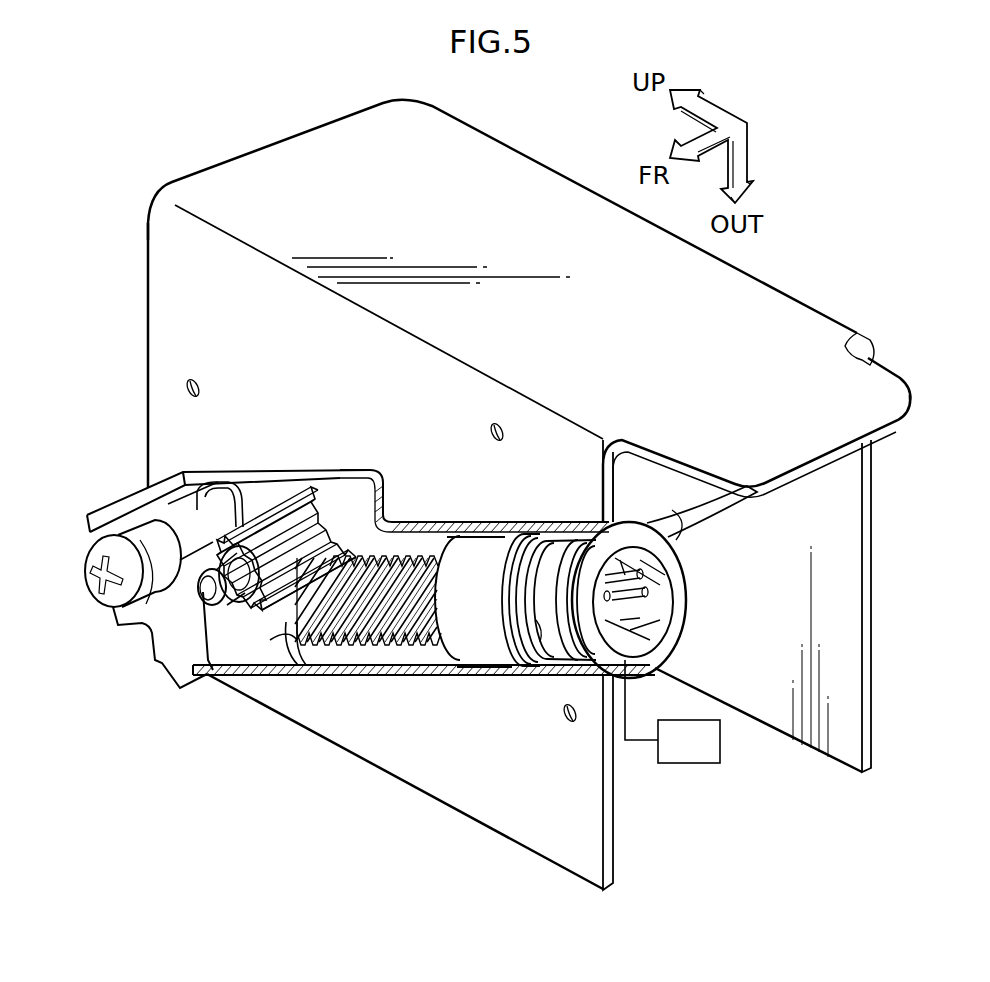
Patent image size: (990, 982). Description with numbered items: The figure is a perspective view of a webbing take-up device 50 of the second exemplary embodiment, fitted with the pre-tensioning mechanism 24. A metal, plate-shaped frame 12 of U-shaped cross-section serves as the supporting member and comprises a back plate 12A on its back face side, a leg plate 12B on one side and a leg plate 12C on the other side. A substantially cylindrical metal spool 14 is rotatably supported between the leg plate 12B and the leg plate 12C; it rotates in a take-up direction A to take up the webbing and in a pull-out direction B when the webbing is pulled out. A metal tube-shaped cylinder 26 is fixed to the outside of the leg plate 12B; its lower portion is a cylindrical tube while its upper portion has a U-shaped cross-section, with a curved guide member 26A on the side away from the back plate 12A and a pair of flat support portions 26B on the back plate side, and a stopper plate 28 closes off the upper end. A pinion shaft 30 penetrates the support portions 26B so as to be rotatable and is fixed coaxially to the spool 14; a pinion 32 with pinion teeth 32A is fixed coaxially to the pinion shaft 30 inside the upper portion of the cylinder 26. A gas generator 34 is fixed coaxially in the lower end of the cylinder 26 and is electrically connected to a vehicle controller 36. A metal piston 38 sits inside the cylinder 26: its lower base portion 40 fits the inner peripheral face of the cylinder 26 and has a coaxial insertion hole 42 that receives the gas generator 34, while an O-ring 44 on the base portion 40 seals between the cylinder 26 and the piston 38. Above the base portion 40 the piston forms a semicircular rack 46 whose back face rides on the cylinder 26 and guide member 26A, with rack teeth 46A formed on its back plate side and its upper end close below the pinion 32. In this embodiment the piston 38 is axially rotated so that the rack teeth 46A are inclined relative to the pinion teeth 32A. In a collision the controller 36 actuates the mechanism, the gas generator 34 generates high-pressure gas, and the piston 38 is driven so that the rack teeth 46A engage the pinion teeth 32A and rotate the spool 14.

The webbing take-up device 50 is at (196, 146).
The frame 12 is at (503, 140).
The back plate 12A is at (283, 138).
The leg plate 12B is at (148, 357).
The leg plate 12C is at (872, 567).
The spool 14 is at (680, 513).
The pre-tensioning mechanism 24 is at (298, 428).
The cylinder 26 is at (483, 522).
The guide member 26A is at (237, 676).
The support portions 26B is at (220, 467).
The stopper plate 28 is at (120, 497).
The pinion shaft 30 is at (208, 590).
The pinion 32 is at (320, 477).
The pinion teeth 32A is at (287, 620).
The gas generator 34 is at (570, 537).
The controller 36 is at (690, 764).
The piston 38 is at (392, 676).
The base portion 40 is at (483, 675).
The insertion hole 42 is at (548, 630).
The O-ring 44 is at (520, 540).
The rack 46 is at (340, 674).
The rack teeth 46A is at (297, 630).
The take-up direction A is at (352, 492).
The pull-out direction B is at (272, 492).